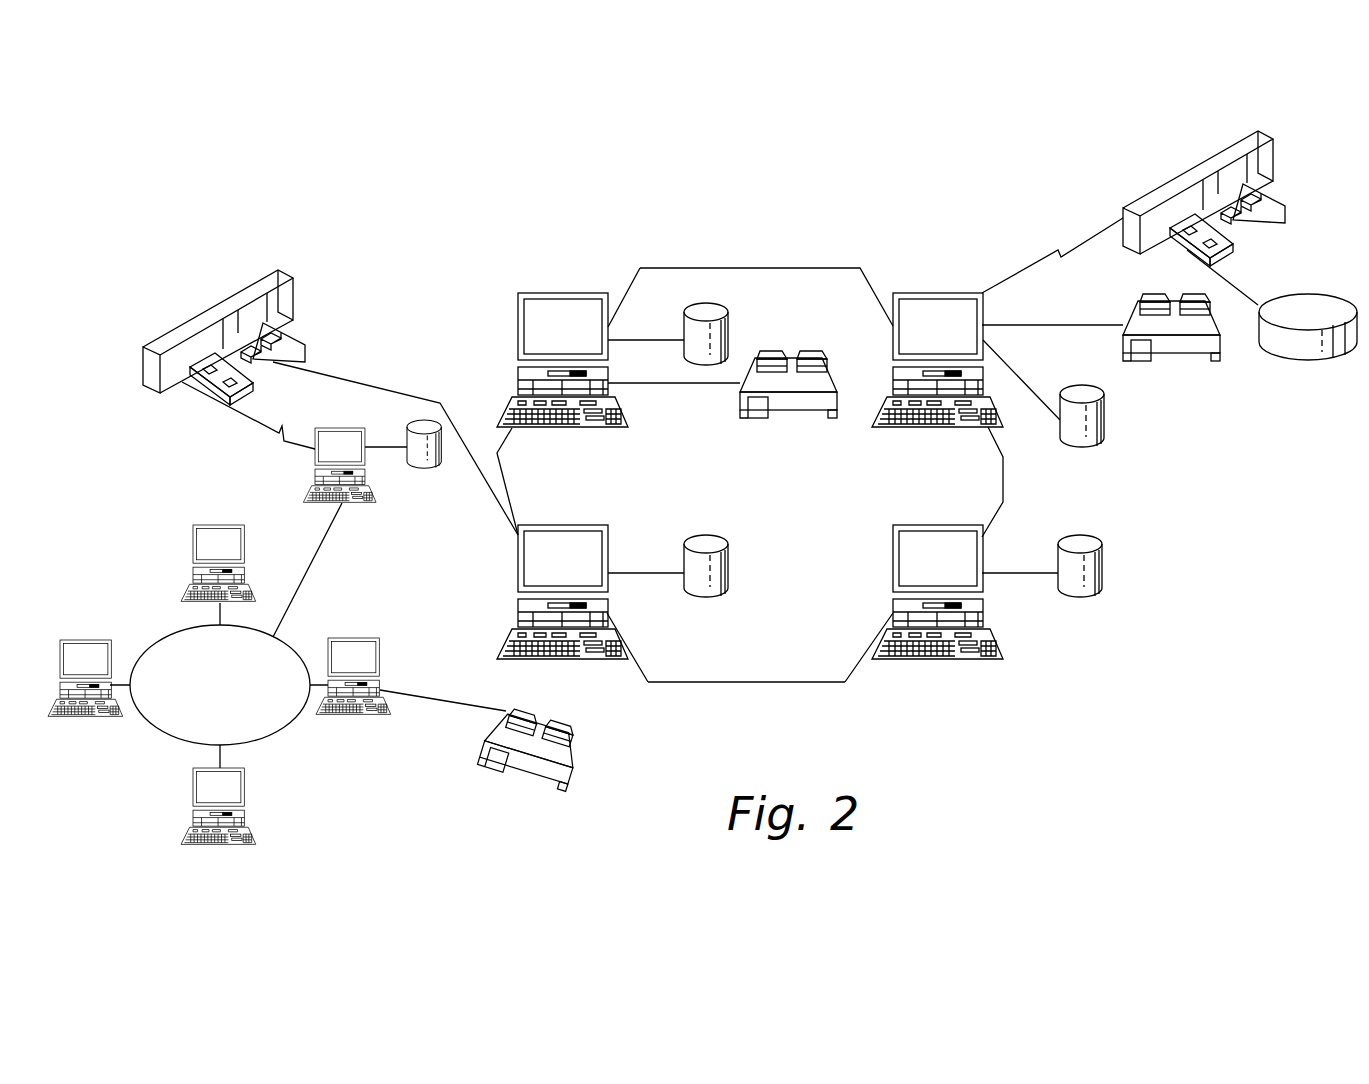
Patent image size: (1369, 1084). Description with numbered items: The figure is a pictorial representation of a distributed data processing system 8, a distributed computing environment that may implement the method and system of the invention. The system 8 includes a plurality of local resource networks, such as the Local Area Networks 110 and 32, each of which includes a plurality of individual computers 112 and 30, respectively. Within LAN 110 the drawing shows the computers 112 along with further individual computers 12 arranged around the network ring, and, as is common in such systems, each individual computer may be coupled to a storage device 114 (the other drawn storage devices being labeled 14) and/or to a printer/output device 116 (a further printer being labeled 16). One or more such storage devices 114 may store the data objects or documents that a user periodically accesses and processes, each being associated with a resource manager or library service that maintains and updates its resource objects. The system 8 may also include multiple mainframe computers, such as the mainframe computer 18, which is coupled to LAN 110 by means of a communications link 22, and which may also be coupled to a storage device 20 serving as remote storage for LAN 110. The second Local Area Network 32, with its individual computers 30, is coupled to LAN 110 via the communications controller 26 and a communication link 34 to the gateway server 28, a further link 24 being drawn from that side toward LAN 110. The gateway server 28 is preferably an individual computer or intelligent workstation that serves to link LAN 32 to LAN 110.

The distributed data processing system 8 is at (753, 228).
The workstation computer 12 is at (548, 292).
The storage device 14 is at (728, 330).
The printer 16 is at (787, 366).
The mainframe computer 18 is at (1187, 170).
The storage device 20 is at (1307, 295).
The communications link 22 is at (1080, 240).
The communication link 24 is at (365, 382).
The communications controller 26 is at (287, 274).
The gateway server 28 is at (335, 427).
The individual computers 30 is at (218, 523).
The Local Area Network 32 is at (160, 733).
The communication link 34 is at (233, 411).
The Local Area Network 110 is at (705, 683).
The individual computers 112 is at (926, 523).
The storage device 114 is at (1105, 562).
The printer/output device 116 is at (583, 743).